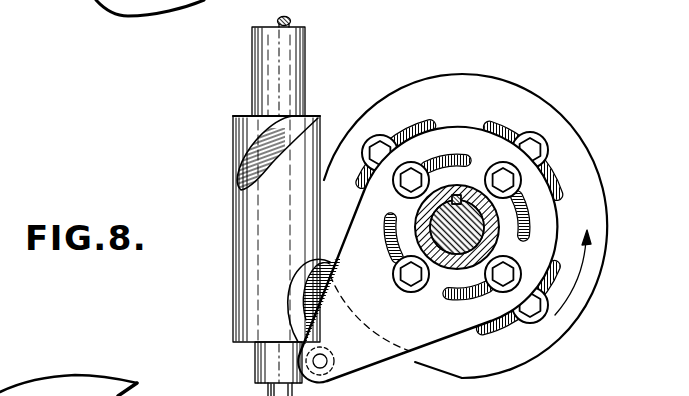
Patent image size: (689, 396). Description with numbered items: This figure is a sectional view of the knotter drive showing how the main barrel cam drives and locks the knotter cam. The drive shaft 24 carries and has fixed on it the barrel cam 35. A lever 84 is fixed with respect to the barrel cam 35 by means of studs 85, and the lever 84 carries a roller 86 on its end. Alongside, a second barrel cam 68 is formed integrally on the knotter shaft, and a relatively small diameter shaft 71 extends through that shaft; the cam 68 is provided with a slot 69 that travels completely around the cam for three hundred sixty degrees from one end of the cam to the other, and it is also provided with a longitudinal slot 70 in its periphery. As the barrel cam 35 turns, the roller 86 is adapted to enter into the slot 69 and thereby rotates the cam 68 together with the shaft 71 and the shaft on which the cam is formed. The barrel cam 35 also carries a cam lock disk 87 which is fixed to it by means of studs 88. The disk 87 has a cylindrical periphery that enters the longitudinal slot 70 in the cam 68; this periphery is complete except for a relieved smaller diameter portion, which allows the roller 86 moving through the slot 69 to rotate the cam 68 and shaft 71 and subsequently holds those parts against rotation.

The drive shaft 24 is at (417, 212).
The barrel cam 35 is at (500, 245).
The barrel cam 68 is at (235, 117).
The slot 69 is at (250, 174).
The longitudinal slot 70 is at (305, 215).
The shaft 71 is at (291, 21).
The lever 84 is at (384, 361).
The studs 85 is at (498, 164).
The roller 86 is at (336, 382).
The cam lock disk 87 is at (553, 115).
The studs 88 is at (542, 150).